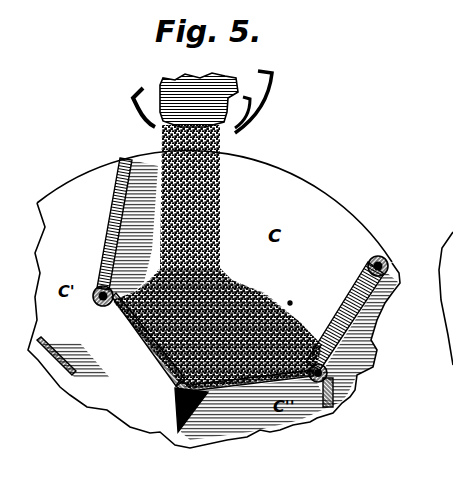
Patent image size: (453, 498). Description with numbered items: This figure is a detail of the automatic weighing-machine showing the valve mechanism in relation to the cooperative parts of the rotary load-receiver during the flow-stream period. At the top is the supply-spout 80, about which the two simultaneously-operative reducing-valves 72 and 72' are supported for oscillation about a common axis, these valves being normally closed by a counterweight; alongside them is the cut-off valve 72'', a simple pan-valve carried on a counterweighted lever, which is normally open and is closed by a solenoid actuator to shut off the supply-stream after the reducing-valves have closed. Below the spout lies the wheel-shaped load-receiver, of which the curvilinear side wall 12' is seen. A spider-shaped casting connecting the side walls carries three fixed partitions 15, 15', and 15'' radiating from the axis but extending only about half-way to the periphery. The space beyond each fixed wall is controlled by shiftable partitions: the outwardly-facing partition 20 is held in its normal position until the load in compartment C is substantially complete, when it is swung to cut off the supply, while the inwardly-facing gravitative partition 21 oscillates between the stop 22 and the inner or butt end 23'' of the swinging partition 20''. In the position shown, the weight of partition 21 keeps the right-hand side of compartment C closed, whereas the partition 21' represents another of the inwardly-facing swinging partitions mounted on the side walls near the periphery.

The supply-spout 80 is at (199, 100).
The reducing-valve 72 is at (127, 107).
The reducing-valve 72' is at (263, 102).
The cut-off valve 72'' is at (255, 119).
The shiftable partition 20 is at (116, 232).
The side wall 12' is at (214, 299).
The gravitative partition 21 is at (354, 330).
The butt end of swinging partition 23'' is at (353, 370).
The shiftable partition 20'' is at (352, 392).
The fixed partition 15 is at (216, 330).
The fixed partition 15' is at (174, 410).
The fixed partition 15'' is at (258, 411).
The shiftable partition 21' is at (73, 352).
The stop 22 is at (292, 302).